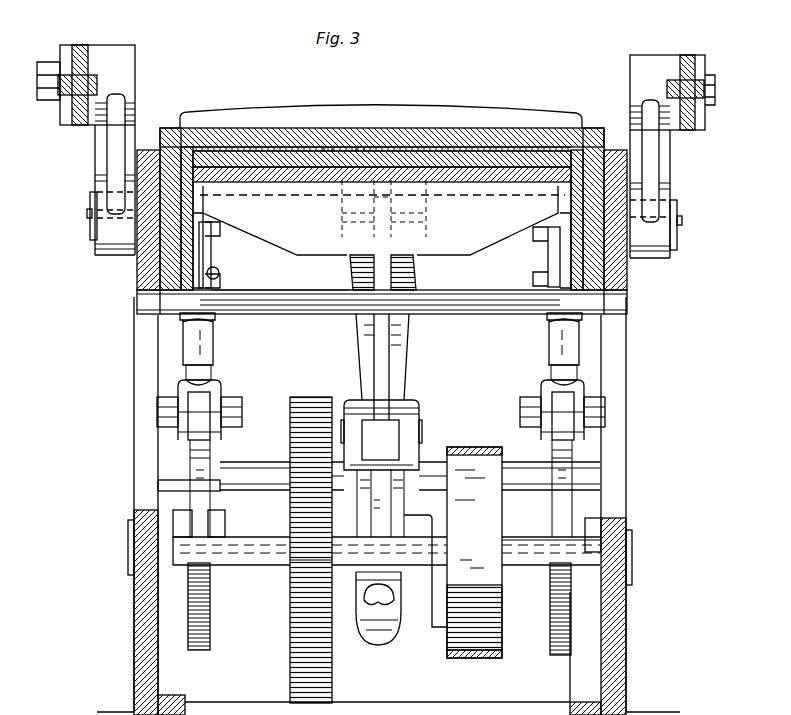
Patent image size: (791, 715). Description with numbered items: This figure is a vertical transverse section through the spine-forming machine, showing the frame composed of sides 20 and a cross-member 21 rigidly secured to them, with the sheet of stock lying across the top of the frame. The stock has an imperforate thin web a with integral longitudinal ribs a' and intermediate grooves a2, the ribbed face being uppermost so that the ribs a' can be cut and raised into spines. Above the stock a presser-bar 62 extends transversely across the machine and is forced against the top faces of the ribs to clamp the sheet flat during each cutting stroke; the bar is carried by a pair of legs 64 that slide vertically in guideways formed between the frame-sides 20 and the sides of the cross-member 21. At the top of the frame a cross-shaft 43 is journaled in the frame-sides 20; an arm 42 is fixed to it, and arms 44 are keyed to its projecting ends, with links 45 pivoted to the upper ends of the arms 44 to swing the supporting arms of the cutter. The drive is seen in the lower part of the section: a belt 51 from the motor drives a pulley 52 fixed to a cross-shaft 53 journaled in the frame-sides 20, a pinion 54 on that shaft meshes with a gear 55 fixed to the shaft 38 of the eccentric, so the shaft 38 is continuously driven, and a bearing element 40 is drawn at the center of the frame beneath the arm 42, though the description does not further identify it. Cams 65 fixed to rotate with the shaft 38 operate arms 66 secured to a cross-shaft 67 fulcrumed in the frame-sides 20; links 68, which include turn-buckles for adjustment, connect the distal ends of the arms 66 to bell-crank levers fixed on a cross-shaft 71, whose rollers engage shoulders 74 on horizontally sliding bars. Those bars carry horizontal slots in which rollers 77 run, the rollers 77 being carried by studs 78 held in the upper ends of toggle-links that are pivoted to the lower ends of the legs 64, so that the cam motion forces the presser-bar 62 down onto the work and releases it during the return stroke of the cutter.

The frame-sides 20 is at (620, 386).
The cross-member 21 is at (213, 168).
The shaft 38 is at (250, 532).
The bearing block 40 is at (404, 500).
The arm 42 is at (404, 376).
The cross-shaft 43 is at (515, 238).
The arms 44 is at (104, 158).
The links 45 is at (89, 50).
The belt 51 is at (466, 657).
The pulley 52 is at (474, 552).
The cross-shaft 53 is at (573, 550).
The pinion 54 is at (300, 566).
The gear 55 is at (314, 396).
The presser-bar 62 is at (500, 122).
The legs 64 is at (148, 272).
The cams 65 is at (190, 597).
The arms 66 is at (218, 436).
The cross-shaft 67 is at (264, 466).
The links 68 is at (214, 354).
The cross-shaft 71 is at (482, 309).
The shoulders 74 is at (201, 249).
The rollers 77 is at (219, 271).
The studs 78 is at (220, 287).
The web a is at (382, 117).
The ribs a' is at (339, 117).
The grooves a2 is at (364, 148).